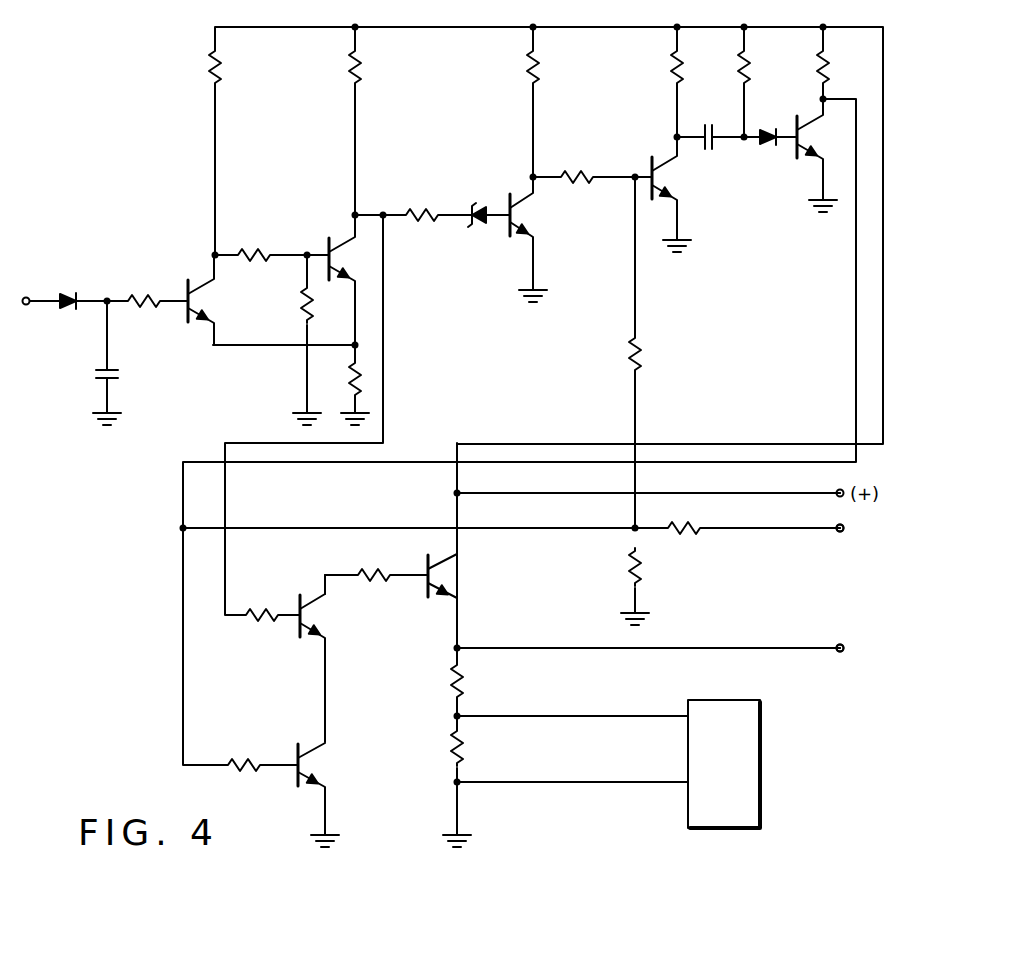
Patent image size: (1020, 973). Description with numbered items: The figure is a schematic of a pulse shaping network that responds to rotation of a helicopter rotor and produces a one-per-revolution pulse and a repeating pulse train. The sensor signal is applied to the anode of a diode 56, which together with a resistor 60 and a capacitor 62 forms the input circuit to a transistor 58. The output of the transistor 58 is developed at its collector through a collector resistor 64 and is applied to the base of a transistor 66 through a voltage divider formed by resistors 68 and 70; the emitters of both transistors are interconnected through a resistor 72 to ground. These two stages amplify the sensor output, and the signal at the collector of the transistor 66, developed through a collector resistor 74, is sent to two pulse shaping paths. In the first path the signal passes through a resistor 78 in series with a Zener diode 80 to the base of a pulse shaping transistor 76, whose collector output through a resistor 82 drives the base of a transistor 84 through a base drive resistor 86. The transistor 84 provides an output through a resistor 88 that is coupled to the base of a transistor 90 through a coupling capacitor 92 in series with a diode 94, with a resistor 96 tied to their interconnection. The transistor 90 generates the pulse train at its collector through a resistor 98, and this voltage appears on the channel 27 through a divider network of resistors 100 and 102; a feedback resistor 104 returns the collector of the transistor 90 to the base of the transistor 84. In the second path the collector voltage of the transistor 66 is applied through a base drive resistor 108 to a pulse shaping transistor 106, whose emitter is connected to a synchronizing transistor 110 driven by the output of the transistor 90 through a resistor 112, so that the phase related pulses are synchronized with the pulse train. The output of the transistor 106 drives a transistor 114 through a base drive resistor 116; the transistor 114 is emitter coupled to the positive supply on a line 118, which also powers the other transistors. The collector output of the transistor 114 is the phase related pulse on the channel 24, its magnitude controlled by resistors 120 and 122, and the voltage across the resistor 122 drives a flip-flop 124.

The diode 56 is at (67, 295).
The resistor 60 is at (145, 295).
The capacitor 62 is at (118, 376).
The transistor 58 is at (200, 293).
The collector resistor 64 is at (222, 72).
The transistor 66 is at (338, 243).
The resistor 68 is at (253, 253).
The resistor 70 is at (300, 312).
The resistor 72 is at (350, 381).
The collector resistor 74 is at (362, 72).
The pulse shaping transistor 76 is at (525, 200).
The resistor 78 is at (414, 206).
The Zener diode 80 is at (476, 206).
The resistor 82 is at (540, 72).
The transistor 84 is at (662, 162).
The base drive resistor 86 is at (578, 171).
The resistor 88 is at (683, 72).
The transistor 90 is at (805, 128).
The coupling capacitor 92 is at (707, 150).
The diode 94 is at (765, 150).
The resistor 96 is at (750, 72).
The resistor 98 is at (830, 72).
The resistor 100 is at (694, 528).
The resistor 102 is at (641, 585).
The feedback resistor 104 is at (641, 356).
The pulse shaping transistor 106 is at (306, 618).
The base drive resistor 108 is at (266, 609).
The synchronizing transistor 110 is at (306, 757).
The resistor 112 is at (243, 759).
The transistor 114 is at (452, 565).
The base drive resistor 116 is at (362, 572).
The line 118 is at (695, 493).
The resistor 120 is at (463, 690).
The resistor 122 is at (463, 750).
The flip-flop 124 is at (762, 738).
The channel 24 is at (745, 648).
The channel 27 is at (786, 530).